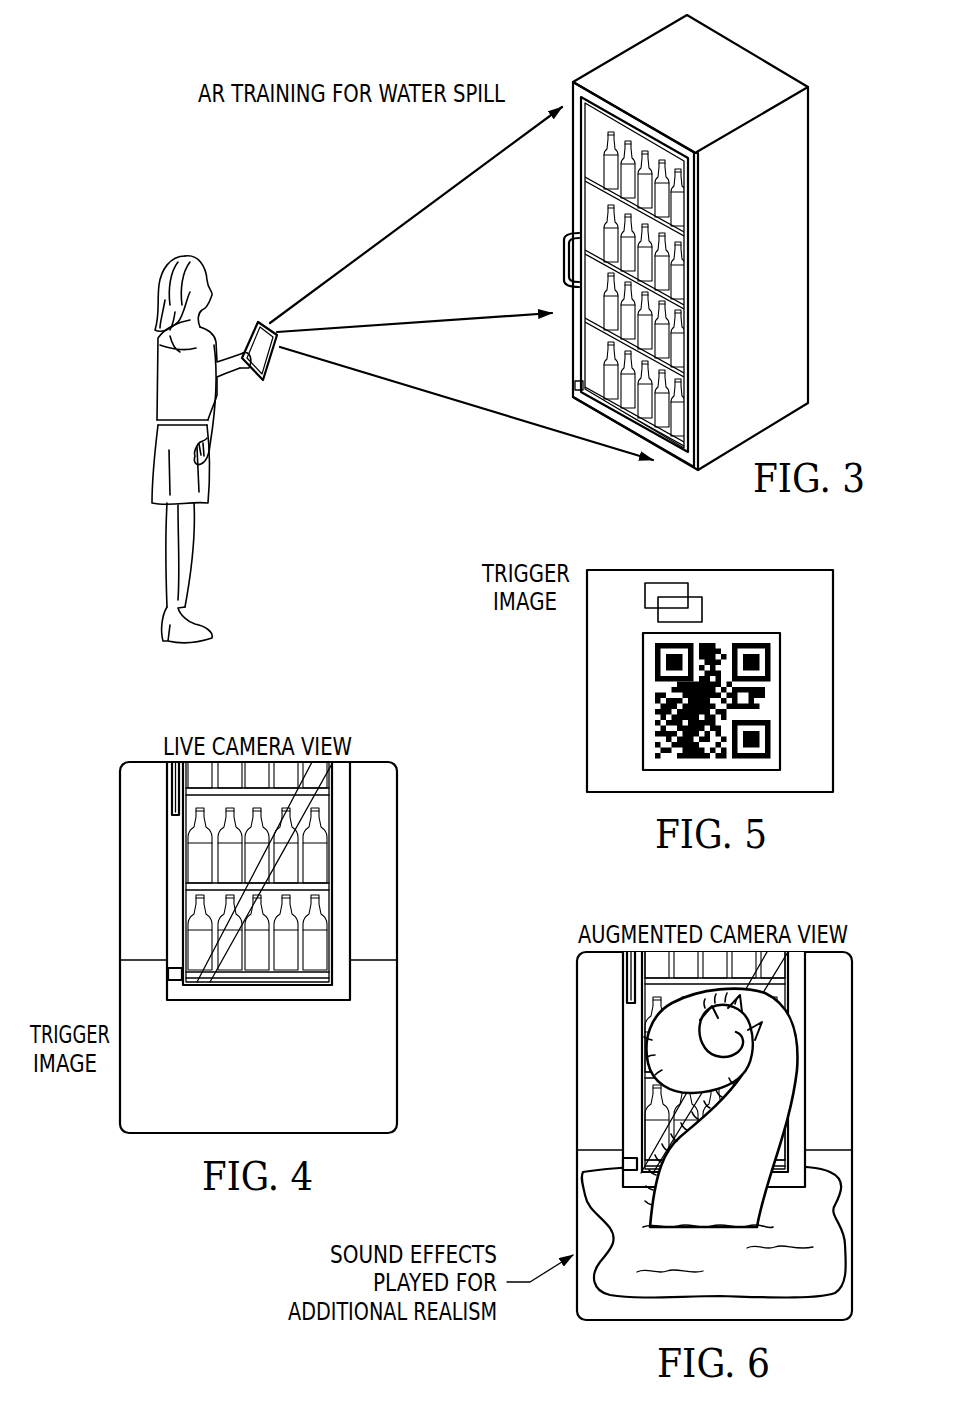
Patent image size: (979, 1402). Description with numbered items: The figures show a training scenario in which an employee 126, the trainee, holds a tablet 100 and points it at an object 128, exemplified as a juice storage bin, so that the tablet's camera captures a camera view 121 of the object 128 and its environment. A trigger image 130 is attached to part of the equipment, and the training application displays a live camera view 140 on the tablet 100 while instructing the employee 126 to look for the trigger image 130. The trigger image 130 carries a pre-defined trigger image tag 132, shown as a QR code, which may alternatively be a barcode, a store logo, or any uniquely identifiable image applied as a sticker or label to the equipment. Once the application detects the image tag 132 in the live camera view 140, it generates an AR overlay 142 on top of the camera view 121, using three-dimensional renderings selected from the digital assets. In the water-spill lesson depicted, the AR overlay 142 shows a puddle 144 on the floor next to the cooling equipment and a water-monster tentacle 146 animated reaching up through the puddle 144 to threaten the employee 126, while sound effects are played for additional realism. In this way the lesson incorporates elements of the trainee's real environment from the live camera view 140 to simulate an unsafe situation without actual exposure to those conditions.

In FIG. 3, the tablet 100 is at (273, 360).
In FIG. 3, the camera view 121 is at (407, 221).
In FIG. 3, the employee 126 is at (183, 256).
In FIG. 3, the object 128 is at (750, 50).
In FIG. 4, the object 128 is at (165, 882).
In FIG. 6, the object 128 is at (805, 1008).
In FIG. 3, the trigger image 130 is at (575, 385).
In FIG. 4, the trigger image 130 is at (167, 975).
In FIG. 5, the trigger image 130 is at (587, 653).
In FIG. 5, the trigger image tag 132 is at (780, 700).
In FIG. 4, the live camera view 140 is at (147, 760).
In FIG. 6, the AR overlay 142 is at (575, 1030).
In FIG. 6, the puddle 144 is at (823, 1208).
In FIG. 6, the water-monster tentacle 146 is at (788, 1070).